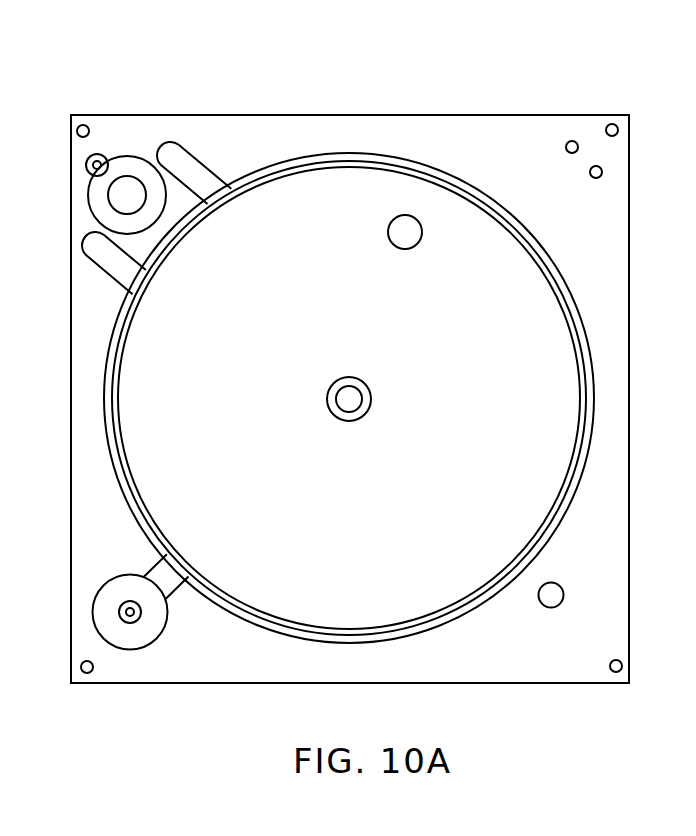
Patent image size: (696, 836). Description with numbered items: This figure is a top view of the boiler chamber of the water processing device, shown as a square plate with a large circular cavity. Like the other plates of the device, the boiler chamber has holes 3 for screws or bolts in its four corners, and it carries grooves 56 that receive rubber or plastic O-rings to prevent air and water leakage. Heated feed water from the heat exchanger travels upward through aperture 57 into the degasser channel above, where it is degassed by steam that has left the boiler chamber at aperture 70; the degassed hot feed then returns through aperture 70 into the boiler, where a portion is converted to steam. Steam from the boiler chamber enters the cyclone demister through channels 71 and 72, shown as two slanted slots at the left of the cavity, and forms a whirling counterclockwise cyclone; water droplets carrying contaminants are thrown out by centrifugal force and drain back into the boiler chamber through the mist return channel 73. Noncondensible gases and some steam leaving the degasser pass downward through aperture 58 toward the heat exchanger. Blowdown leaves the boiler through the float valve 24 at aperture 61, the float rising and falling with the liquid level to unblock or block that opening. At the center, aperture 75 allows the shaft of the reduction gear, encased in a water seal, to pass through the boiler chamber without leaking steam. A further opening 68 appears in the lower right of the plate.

The holes 3 is at (82, 125).
The float valve 24 is at (98, 587).
The grooves 56 is at (582, 420).
The aperture 57 is at (567, 143).
The aperture 58 is at (602, 172).
The aperture 61 is at (136, 617).
The hole 68 is at (545, 606).
The aperture 70 is at (406, 217).
The channel 71 is at (93, 247).
The channel 72 is at (180, 150).
The mist return channel 73 is at (100, 155).
The aperture 75 is at (346, 406).